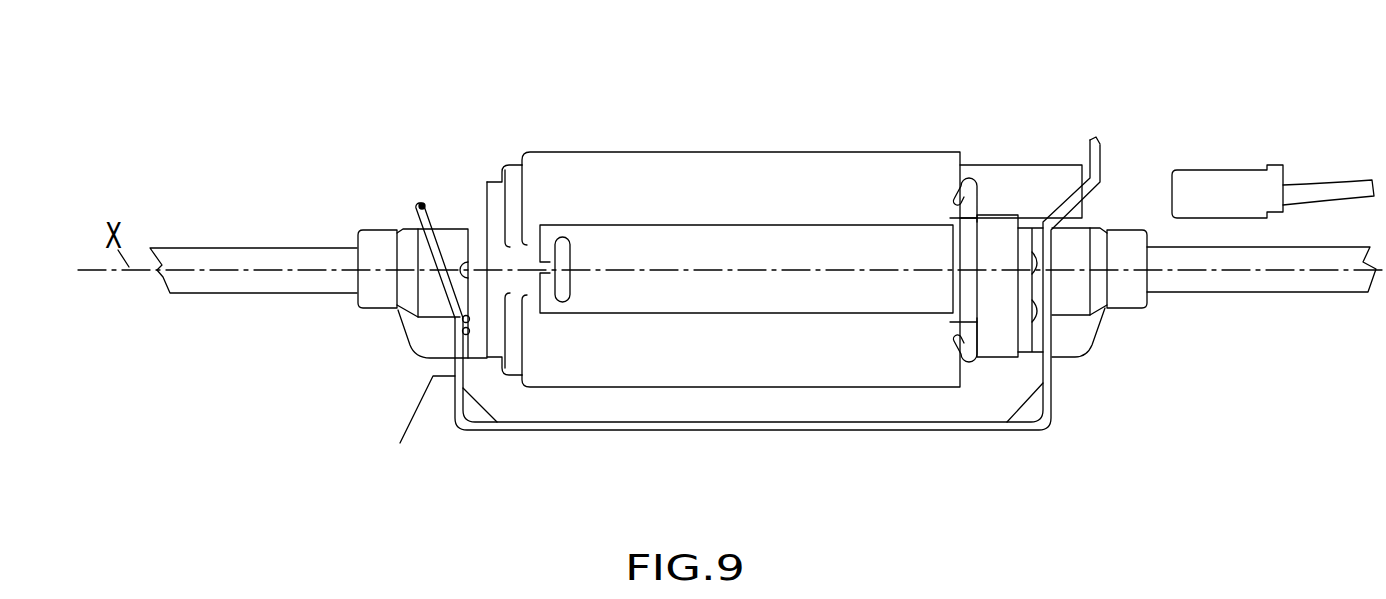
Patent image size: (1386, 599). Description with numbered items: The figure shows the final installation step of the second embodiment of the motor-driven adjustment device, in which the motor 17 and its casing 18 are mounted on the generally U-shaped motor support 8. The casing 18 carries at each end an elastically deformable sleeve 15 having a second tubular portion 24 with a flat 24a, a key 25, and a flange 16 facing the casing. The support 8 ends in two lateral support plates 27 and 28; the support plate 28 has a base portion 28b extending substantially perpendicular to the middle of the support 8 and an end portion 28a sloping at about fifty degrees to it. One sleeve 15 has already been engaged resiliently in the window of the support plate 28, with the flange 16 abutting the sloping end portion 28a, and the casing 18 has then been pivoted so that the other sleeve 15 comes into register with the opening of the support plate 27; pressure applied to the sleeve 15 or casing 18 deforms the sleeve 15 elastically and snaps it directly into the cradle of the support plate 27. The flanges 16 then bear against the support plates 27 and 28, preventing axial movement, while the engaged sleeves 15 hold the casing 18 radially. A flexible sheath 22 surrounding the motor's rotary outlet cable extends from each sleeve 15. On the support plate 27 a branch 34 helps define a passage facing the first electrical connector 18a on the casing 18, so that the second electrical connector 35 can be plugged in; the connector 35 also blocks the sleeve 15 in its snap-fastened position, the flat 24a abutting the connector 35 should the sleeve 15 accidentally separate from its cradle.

The motor support 8 is at (810, 446).
The elastically deformable sleeve 15 is at (371, 324).
The flange 16 is at (477, 340).
The motor 17 is at (636, 129).
The casing 18 is at (758, 180).
The first electrical connector 18a is at (1018, 195).
The flexible sheath 22 is at (1338, 277).
The second tubular portion 24 is at (433, 262).
The flat 24a is at (450, 228).
The key 25 is at (1070, 338).
The support plate 27 is at (1017, 448).
The support plate 28 is at (403, 361).
The end portion 28a is at (421, 204).
The base portion 28b is at (419, 430).
The branch 34 is at (1102, 147).
The second electrical connector 35 is at (1208, 196).